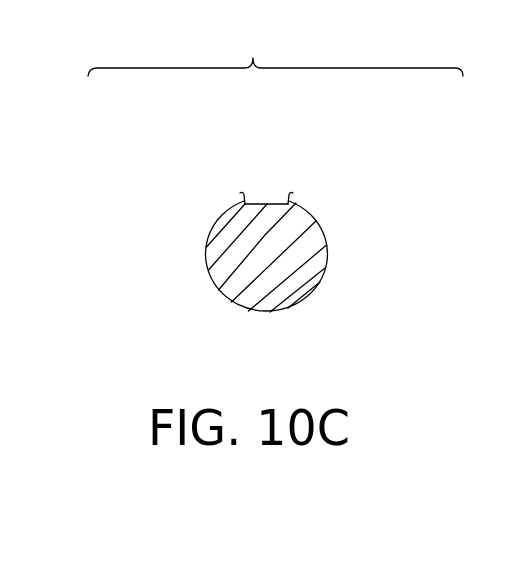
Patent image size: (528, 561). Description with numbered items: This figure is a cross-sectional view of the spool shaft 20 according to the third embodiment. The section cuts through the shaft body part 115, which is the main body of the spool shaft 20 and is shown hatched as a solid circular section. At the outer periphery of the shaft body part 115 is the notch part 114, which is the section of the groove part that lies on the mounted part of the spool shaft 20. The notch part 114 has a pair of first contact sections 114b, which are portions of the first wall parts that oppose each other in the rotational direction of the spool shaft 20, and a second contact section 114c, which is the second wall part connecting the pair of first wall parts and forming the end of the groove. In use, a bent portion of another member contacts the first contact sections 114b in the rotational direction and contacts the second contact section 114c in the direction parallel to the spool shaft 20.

The notch part 114 is at (275, 49).
The first contact section 114b is at (325, 152).
The second contact section 114c is at (257, 200).
The shaft body part 115 is at (298, 278).
The spool shaft 20 is at (203, 283).